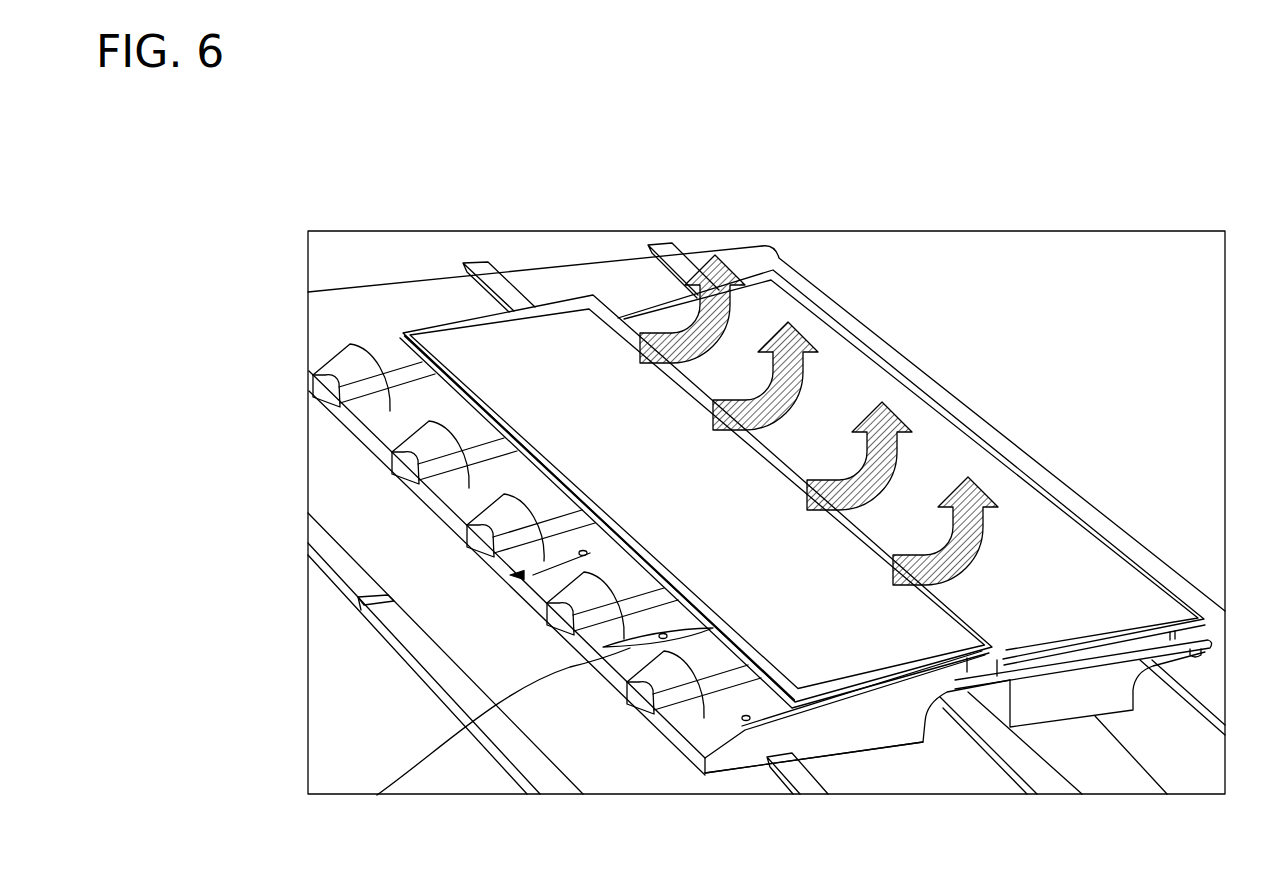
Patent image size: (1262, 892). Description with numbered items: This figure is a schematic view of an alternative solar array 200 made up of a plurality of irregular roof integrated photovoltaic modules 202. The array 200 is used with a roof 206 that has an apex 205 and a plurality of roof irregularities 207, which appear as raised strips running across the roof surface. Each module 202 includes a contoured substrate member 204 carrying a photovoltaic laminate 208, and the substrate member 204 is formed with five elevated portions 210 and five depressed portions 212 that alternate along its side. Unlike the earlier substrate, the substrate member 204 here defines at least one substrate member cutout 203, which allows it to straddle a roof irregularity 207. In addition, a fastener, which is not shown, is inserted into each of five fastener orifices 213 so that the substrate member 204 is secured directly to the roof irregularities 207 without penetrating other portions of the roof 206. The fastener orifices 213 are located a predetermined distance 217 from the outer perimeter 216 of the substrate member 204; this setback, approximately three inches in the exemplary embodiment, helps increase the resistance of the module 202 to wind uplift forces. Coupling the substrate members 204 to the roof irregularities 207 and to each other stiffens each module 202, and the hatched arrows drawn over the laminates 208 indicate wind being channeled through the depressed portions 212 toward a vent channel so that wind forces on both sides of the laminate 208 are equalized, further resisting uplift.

The solar array 200 is at (315, 178).
The irregular roof integrated photovoltaic module 202 is at (433, 312).
The substrate member cutout 203 is at (758, 792).
The contoured substrate member 204 is at (698, 778).
The apex 205 is at (763, 250).
The roof 206 is at (408, 752).
The roof irregularity 207 is at (812, 787).
The photovoltaic laminate 208 is at (711, 505).
The elevated portion 210 is at (380, 353).
The depressed portion 212 is at (415, 408).
The fastener orifice 213 is at (566, 551).
The outer perimeter 216 is at (377, 795).
The predetermined distance 217 is at (565, 565).